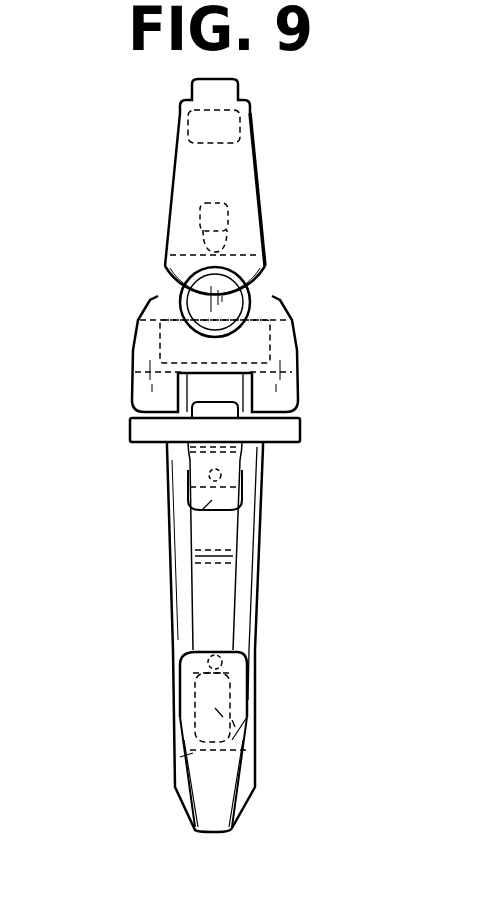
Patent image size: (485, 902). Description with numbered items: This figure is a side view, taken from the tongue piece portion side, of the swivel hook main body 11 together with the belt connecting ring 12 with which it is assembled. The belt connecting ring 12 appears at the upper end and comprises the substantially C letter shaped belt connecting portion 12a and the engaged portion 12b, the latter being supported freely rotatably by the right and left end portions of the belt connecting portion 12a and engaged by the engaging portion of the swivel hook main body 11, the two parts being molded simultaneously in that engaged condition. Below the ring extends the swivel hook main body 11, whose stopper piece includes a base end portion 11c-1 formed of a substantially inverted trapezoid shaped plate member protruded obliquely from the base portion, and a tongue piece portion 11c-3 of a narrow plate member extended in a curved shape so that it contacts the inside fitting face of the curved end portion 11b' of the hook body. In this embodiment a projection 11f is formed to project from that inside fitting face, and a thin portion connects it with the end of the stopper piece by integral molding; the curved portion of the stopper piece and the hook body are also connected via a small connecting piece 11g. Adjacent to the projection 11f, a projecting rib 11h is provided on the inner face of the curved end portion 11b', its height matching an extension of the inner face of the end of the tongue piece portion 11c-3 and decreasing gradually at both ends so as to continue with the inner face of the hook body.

The belt connecting ring 12 is at (246, 248).
The belt connecting portion 12a is at (260, 192).
The engaged portion 12b is at (130, 358).
The swivel hook main body 11 is at (231, 625).
The base end portion 11c-1 is at (190, 513).
The tongue piece portion 11c-3 is at (218, 593).
The connecting piece 11g is at (222, 477).
The curved end portion 11b' is at (162, 739).
The projection 11f is at (257, 670).
The projecting rib 11h is at (260, 727).